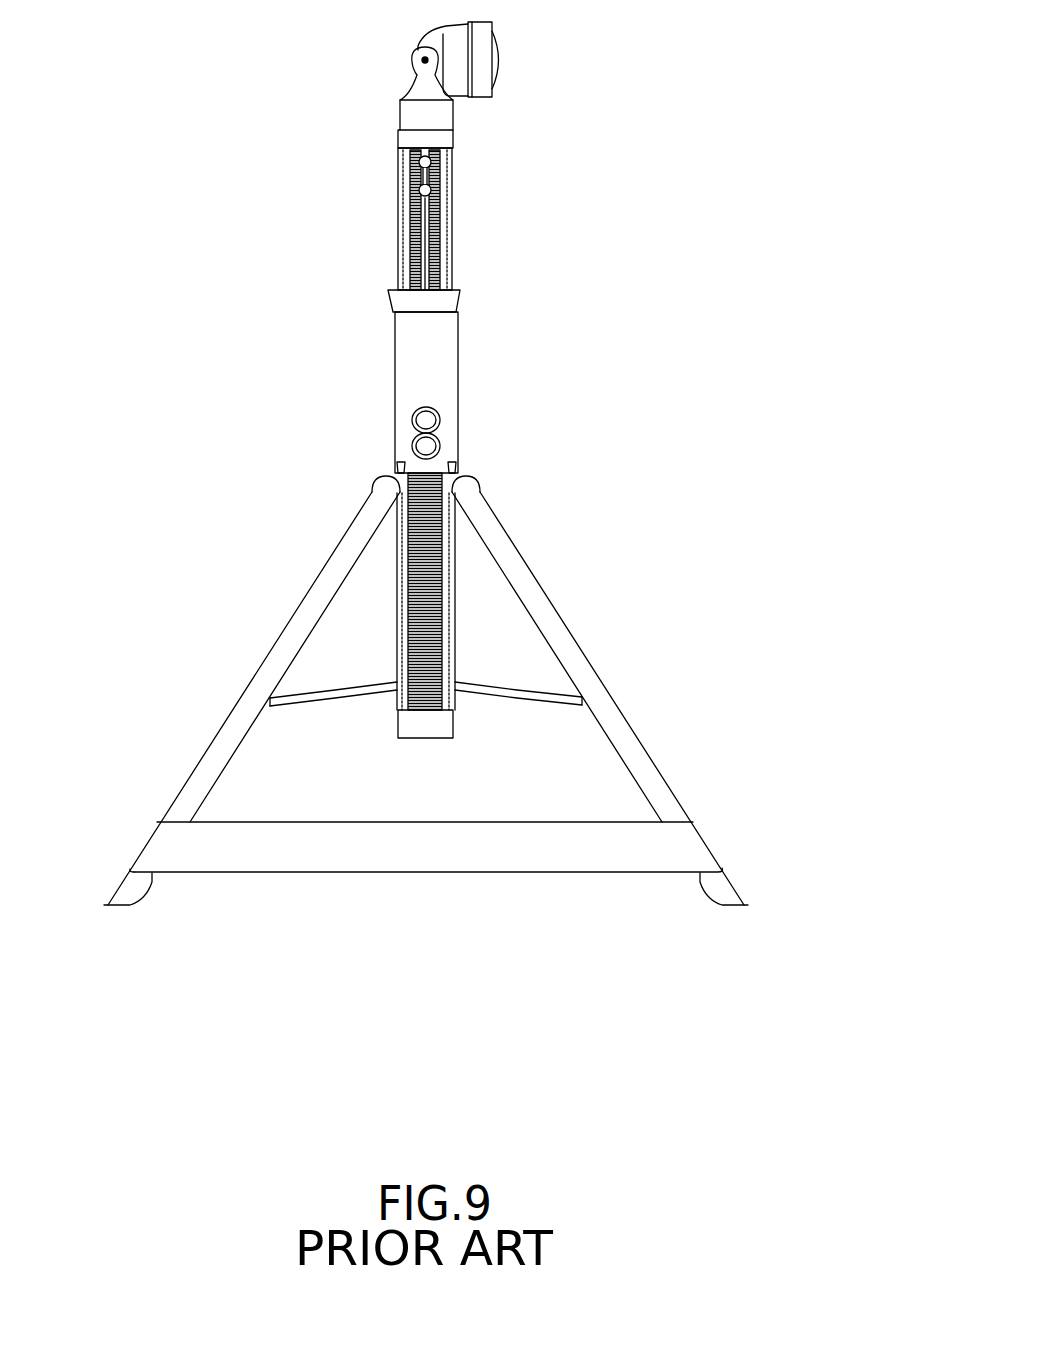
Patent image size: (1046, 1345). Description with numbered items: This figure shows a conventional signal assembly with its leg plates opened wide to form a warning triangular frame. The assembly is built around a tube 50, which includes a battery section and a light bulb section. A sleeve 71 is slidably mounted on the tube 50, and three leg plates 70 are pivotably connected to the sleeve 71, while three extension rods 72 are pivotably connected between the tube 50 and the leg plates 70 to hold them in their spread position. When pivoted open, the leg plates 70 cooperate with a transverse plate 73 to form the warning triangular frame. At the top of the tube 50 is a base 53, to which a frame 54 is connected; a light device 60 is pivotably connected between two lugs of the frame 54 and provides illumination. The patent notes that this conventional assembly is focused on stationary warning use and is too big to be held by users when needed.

The light device 60 is at (507, 62).
The frame 54 is at (445, 114).
The base 53 is at (447, 143).
The tube 50 is at (450, 255).
The sleeve 71 is at (458, 355).
The leg plates 70 is at (541, 597).
The extension rods 72 is at (565, 697).
The transverse plate 73 is at (535, 860).